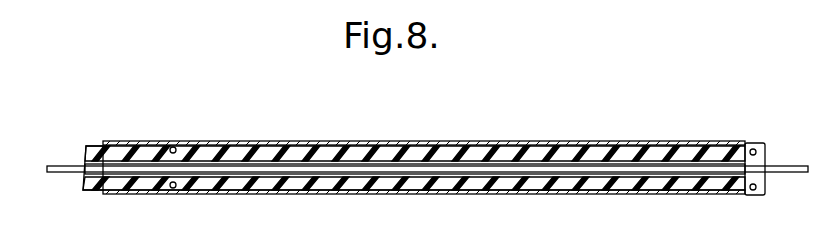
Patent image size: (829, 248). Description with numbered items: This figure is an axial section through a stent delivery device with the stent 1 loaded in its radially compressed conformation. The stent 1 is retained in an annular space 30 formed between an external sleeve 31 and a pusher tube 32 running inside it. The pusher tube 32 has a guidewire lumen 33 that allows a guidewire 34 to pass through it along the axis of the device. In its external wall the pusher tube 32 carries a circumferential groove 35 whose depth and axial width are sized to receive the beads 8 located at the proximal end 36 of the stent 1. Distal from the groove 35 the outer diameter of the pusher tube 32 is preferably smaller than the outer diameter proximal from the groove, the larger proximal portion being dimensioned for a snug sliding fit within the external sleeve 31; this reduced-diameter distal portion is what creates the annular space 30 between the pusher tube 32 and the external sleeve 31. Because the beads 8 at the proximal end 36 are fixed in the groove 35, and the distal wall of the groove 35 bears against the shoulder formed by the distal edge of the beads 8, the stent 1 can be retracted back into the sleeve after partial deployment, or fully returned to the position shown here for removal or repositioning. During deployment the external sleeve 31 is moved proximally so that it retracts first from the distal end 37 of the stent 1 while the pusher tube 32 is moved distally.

The stent 1 is at (268, 142).
The beads 8 is at (172, 148).
The annular space 30 is at (512, 156).
The external sleeve 31 is at (118, 143).
The pusher tube 32 is at (140, 186).
The guidewire lumen 33 is at (83, 178).
The guidewire 34 is at (787, 174).
The circumferential groove 35 is at (200, 145).
The proximal end 36 is at (173, 189).
The distal end 37 is at (755, 149).